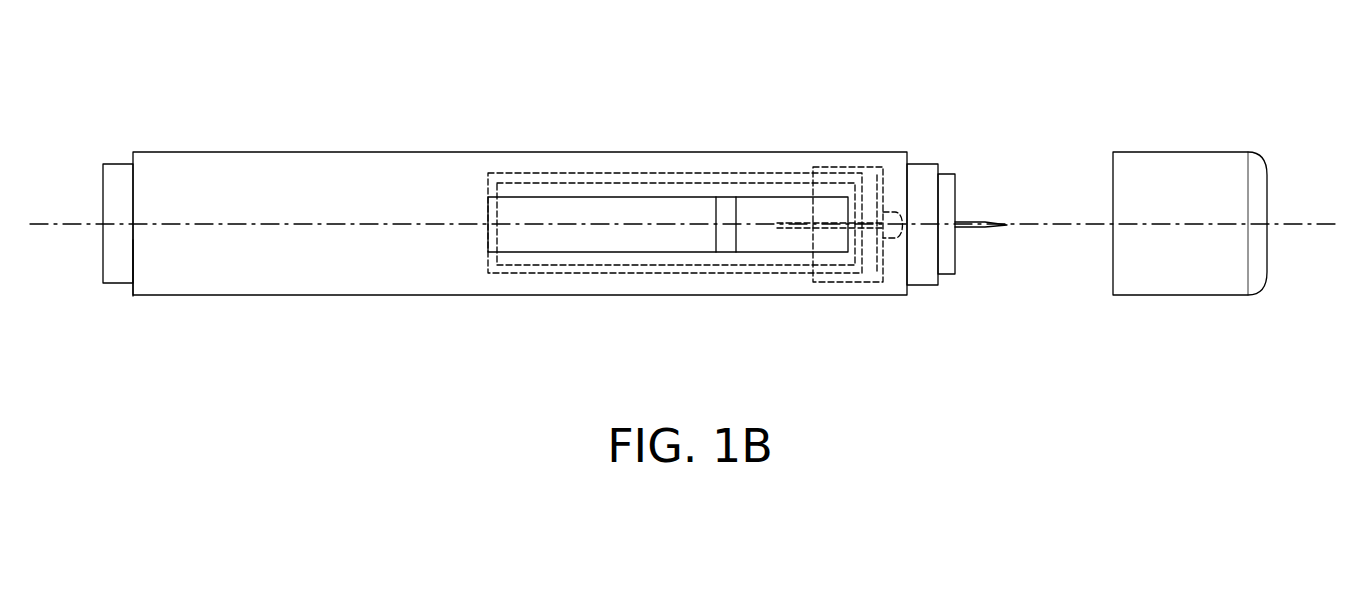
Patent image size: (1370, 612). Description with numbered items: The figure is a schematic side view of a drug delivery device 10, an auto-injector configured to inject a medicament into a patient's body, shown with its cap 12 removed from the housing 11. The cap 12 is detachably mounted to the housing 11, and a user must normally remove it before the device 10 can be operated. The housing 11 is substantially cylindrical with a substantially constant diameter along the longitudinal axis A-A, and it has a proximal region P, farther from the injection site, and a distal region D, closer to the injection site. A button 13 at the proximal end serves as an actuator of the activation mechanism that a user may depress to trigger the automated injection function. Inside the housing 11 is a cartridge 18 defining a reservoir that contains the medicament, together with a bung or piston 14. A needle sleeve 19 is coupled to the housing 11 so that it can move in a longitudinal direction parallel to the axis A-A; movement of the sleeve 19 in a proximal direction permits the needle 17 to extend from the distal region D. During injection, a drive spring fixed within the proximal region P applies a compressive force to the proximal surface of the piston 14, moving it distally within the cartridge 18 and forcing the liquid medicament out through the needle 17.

The drug delivery device 10 is at (1149, 38).
The housing 11 is at (755, 164).
The cap 12 is at (1177, 169).
The button 13 is at (124, 271).
The piston 14 is at (725, 244).
The needle 17 is at (977, 220).
The cartridge 18 is at (530, 276).
The needle sleeve 19 is at (920, 178).
The proximal region P is at (148, 284).
The distal region D is at (886, 284).
The longitudinal axis A is at (685, 224).